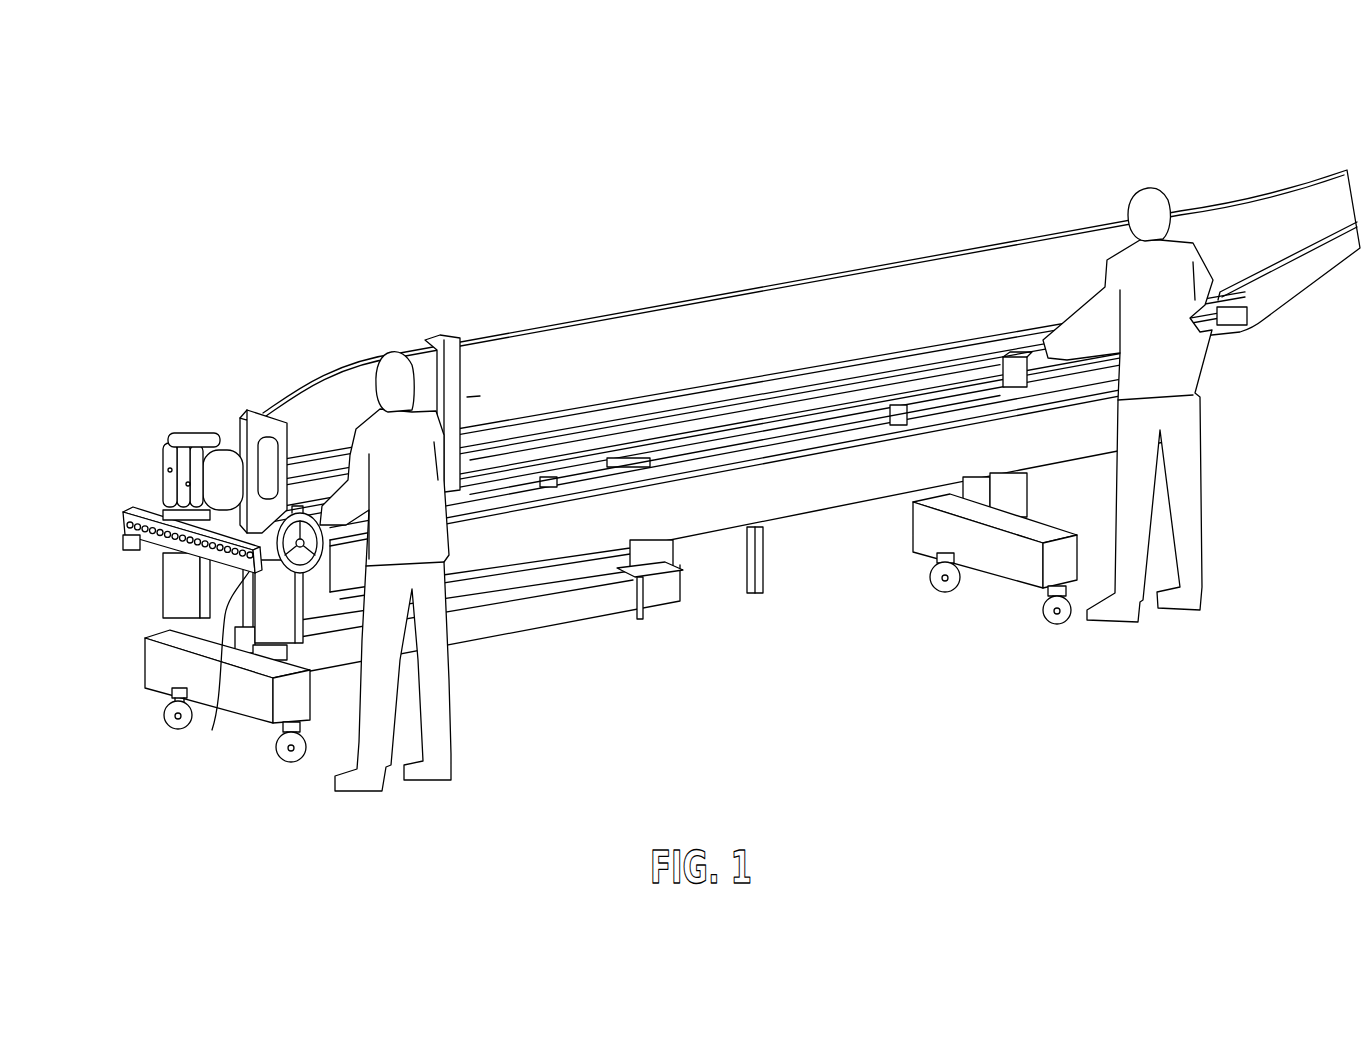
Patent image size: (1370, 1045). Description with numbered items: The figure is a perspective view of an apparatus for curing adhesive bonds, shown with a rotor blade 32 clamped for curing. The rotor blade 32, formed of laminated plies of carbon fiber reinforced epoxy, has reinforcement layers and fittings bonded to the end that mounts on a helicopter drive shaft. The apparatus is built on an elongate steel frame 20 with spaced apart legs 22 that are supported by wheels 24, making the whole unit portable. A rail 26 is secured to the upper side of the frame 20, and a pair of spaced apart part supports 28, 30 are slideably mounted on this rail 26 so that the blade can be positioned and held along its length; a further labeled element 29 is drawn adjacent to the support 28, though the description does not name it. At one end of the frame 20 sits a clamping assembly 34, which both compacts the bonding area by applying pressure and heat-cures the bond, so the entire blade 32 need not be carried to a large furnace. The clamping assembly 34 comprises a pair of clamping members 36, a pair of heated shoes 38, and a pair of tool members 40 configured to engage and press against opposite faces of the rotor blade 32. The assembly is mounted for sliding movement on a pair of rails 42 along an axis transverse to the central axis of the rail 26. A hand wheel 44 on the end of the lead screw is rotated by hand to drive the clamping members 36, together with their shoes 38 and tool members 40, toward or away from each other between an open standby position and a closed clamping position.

The frame 20 is at (830, 483).
The legs 22 is at (195, 624).
The wheels 24 is at (275, 757).
The rail 26 is at (697, 437).
The part support 28 is at (452, 362).
The hose 29 is at (467, 397).
The part support 30 is at (1022, 365).
The rotor blade 32 is at (710, 340).
The clamping assembly 34 is at (183, 543).
The clamping members 36 is at (257, 445).
The heated shoes 38 is at (214, 465).
The tool members 40 is at (187, 484).
The rails 42 is at (122, 520).
The hand wheel 44 is at (212, 730).